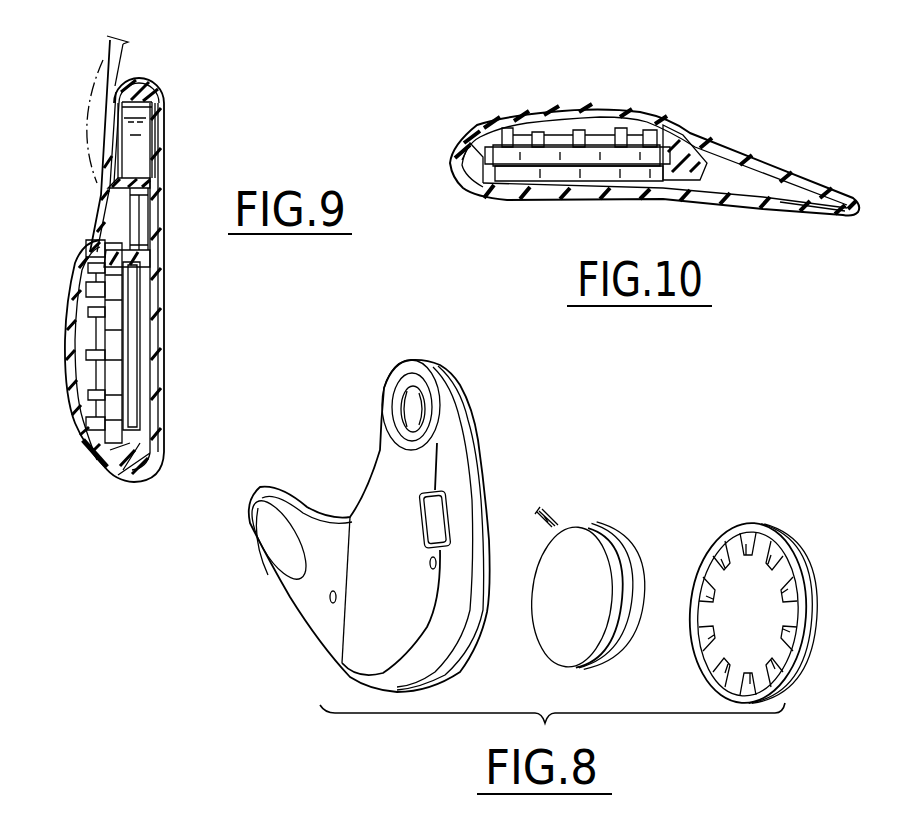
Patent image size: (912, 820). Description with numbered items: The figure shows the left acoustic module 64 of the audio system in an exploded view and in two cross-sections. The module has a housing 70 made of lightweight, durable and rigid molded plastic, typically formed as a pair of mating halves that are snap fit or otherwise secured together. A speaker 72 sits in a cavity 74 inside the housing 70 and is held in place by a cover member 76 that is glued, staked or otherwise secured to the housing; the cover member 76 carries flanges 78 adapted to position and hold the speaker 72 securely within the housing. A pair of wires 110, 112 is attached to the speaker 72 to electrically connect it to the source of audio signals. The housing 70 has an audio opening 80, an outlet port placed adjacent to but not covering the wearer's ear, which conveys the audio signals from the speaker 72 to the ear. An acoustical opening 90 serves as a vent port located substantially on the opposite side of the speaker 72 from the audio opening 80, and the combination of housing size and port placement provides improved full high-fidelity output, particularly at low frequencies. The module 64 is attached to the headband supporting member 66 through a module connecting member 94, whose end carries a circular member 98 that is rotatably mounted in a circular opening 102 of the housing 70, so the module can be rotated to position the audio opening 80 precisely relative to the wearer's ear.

In FIG. 9, the left acoustic module 64 is at (168, 298).
In FIG. 10, the left acoustic module 64 is at (445, 147).
In FIG. 9, the headband supporting member 66 is at (120, 57).
In FIG. 9, the housing 70 is at (77, 433).
In FIG. 10, the housing 70 is at (567, 118).
In FIG. 8, the housing 70 is at (470, 413).
In FIG. 9, the speaker 72 is at (122, 356).
In FIG. 10, the speaker 72 is at (582, 173).
In FIG. 8, the speaker 72 is at (430, 564).
In FIG. 9, the cavity 74 is at (87, 293).
In FIG. 10, the cavity 74 is at (514, 132).
In FIG. 9, the cover member 76 is at (77, 263).
In FIG. 10, the cover member 76 is at (667, 124).
In FIG. 8, the cover member 76 is at (800, 538).
In FIG. 9, the flanges 78 is at (90, 340).
In FIG. 10, the flanges 78 is at (633, 130).
In FIG. 8, the flanges 78 is at (767, 586).
In FIG. 10, the audio opening 80 is at (793, 206).
In FIG. 8, the audio opening 80 is at (280, 543).
In FIG. 9, the acoustical opening 90 is at (157, 219).
In FIG. 8, the acoustical opening 90 is at (446, 517).
In FIG. 9, the module connecting member 94 is at (103, 60).
In FIG. 9, the circular member 98 is at (148, 146).
In FIG. 9, the circular opening 102 is at (148, 128).
In FIG. 8, the circular opening 102 is at (407, 403).
In FIG. 8, the wire 110 is at (560, 523).
In FIG. 8, the wire 112 is at (553, 513).